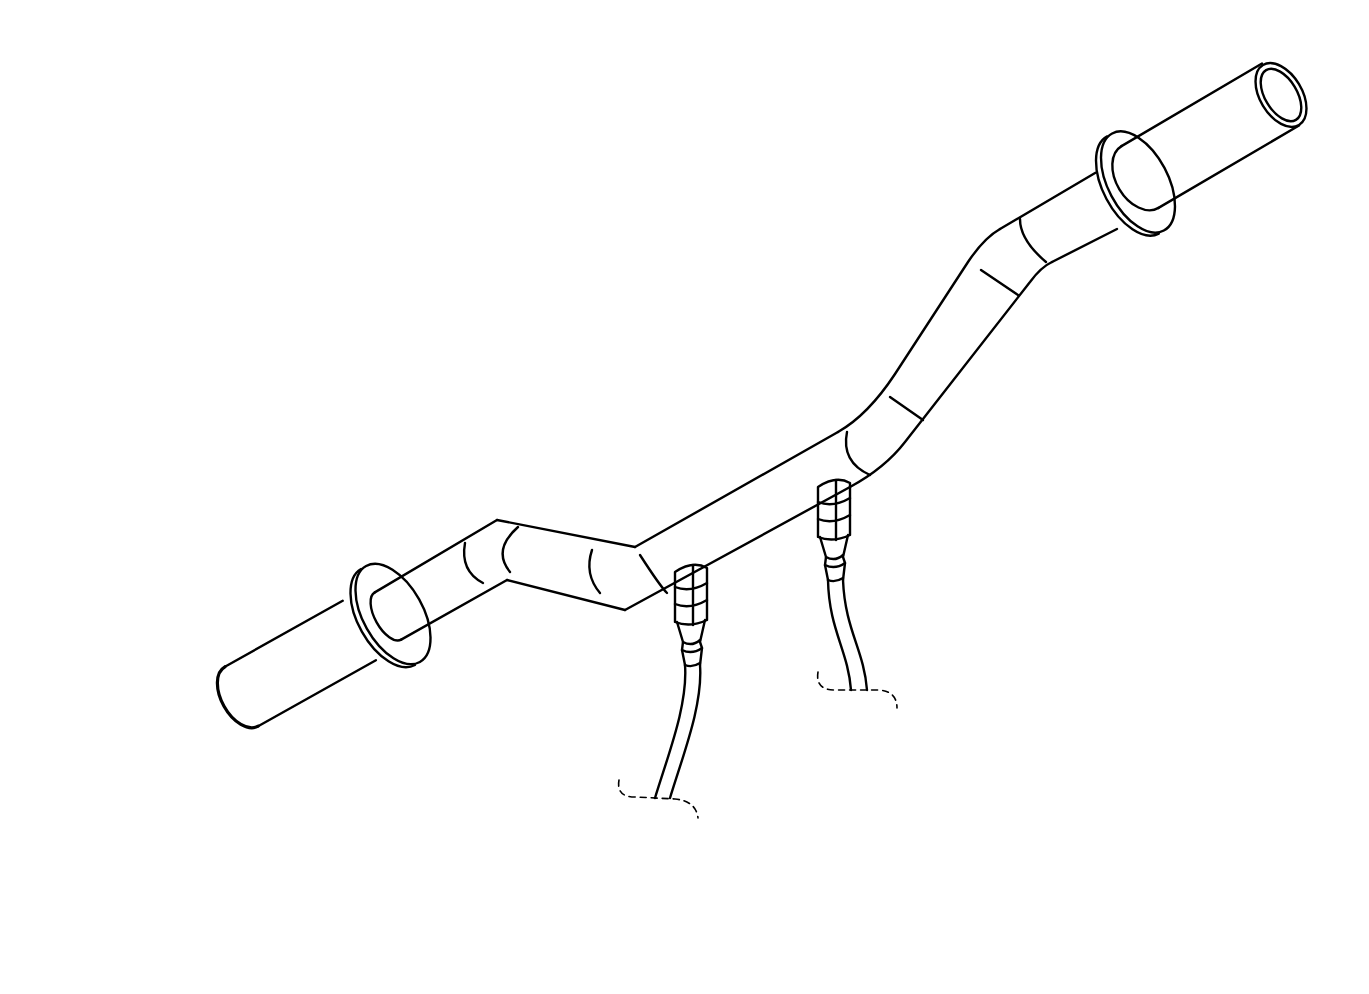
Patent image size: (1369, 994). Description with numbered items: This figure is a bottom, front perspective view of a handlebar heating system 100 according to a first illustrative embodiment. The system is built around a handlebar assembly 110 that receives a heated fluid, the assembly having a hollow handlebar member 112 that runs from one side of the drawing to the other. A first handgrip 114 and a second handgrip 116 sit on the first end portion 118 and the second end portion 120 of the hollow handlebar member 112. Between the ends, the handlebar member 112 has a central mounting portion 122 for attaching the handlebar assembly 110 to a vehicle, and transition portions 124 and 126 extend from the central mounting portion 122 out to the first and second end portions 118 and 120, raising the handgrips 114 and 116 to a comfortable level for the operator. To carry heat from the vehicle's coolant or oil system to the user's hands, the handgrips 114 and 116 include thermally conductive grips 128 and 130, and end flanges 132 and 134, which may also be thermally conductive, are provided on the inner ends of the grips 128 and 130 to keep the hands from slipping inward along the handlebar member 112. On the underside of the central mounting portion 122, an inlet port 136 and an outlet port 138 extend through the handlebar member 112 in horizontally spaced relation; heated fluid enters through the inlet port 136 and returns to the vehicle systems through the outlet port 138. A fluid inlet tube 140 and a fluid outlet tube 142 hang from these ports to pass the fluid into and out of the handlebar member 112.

The handlebar heating system 100 is at (557, 228).
The handlebar assembly 110 is at (413, 515).
The hollow handlebar member 112 is at (487, 518).
The first handgrip 114 is at (268, 628).
The second handgrip 116 is at (1185, 87).
The first end portion 118 is at (443, 605).
The second end portion 120 is at (1082, 232).
The central mounting portion 122 is at (750, 493).
The transition portion 124 is at (562, 548).
The transition portion 126 is at (940, 333).
The thermally conductive grip 128 is at (310, 690).
The thermally conductive grip 130 is at (1220, 163).
The end flange 132 is at (360, 572).
The end flange 134 is at (1107, 143).
The inlet port 136 is at (835, 475).
The outlet port 138 is at (700, 558).
The fluid inlet tube 140 is at (845, 638).
The fluid outlet tube 142 is at (678, 737).